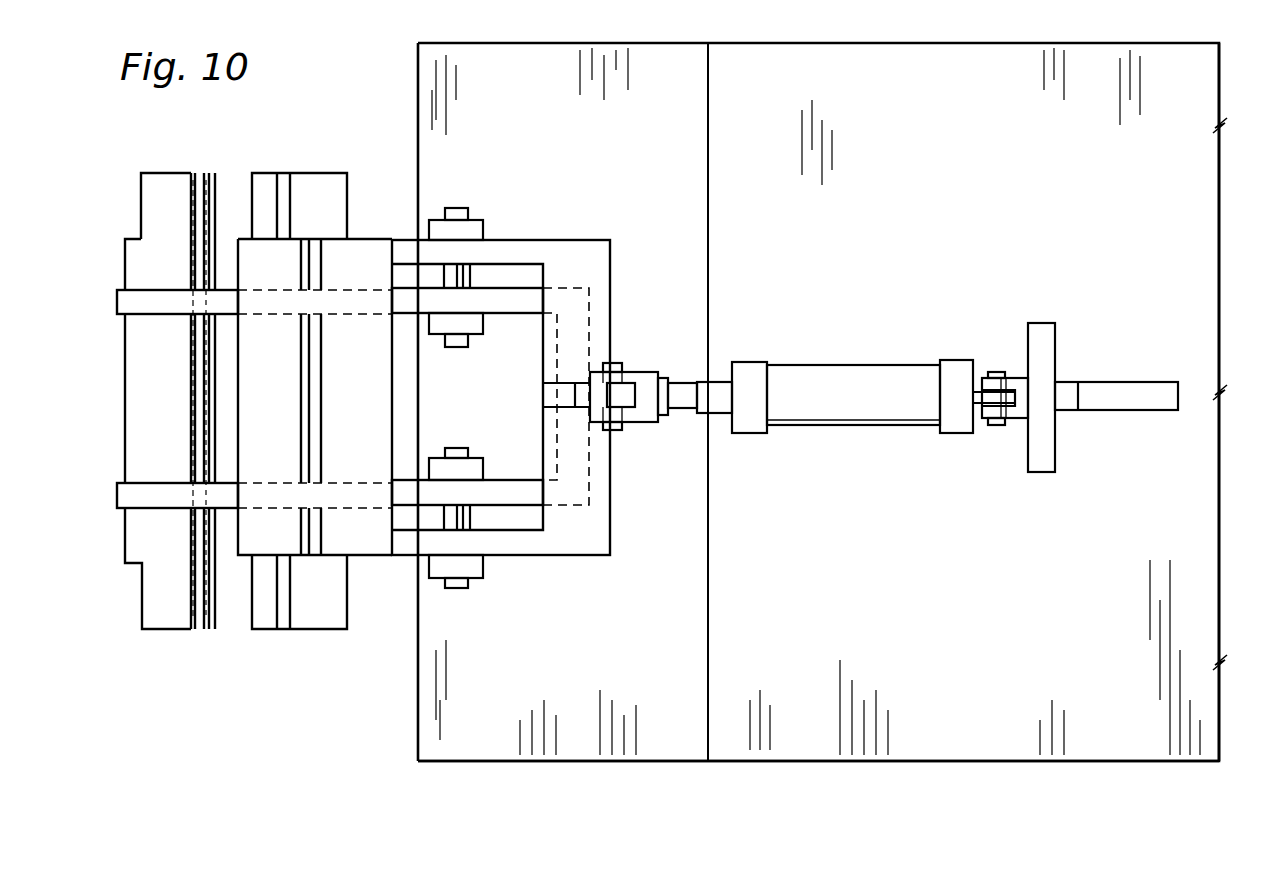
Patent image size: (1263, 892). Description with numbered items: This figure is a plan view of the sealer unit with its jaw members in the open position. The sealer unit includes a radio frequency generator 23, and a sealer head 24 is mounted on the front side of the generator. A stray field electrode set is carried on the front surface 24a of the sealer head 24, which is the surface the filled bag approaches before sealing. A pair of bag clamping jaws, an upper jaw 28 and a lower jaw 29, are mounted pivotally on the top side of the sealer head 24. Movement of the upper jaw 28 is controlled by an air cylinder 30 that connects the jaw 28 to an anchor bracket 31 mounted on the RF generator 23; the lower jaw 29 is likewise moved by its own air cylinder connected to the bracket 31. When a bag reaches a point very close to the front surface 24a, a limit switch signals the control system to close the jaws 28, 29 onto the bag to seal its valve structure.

The radio frequency generator 23 is at (1200, 629).
The sealer head 24 is at (517, 750).
The front surface of the sealer head 24a is at (418, 721).
The upper jaw 28 is at (293, 175).
The lower jaw 29 is at (165, 629).
The air cylinder 30 is at (823, 372).
The anchor bracket 31 is at (1112, 410).